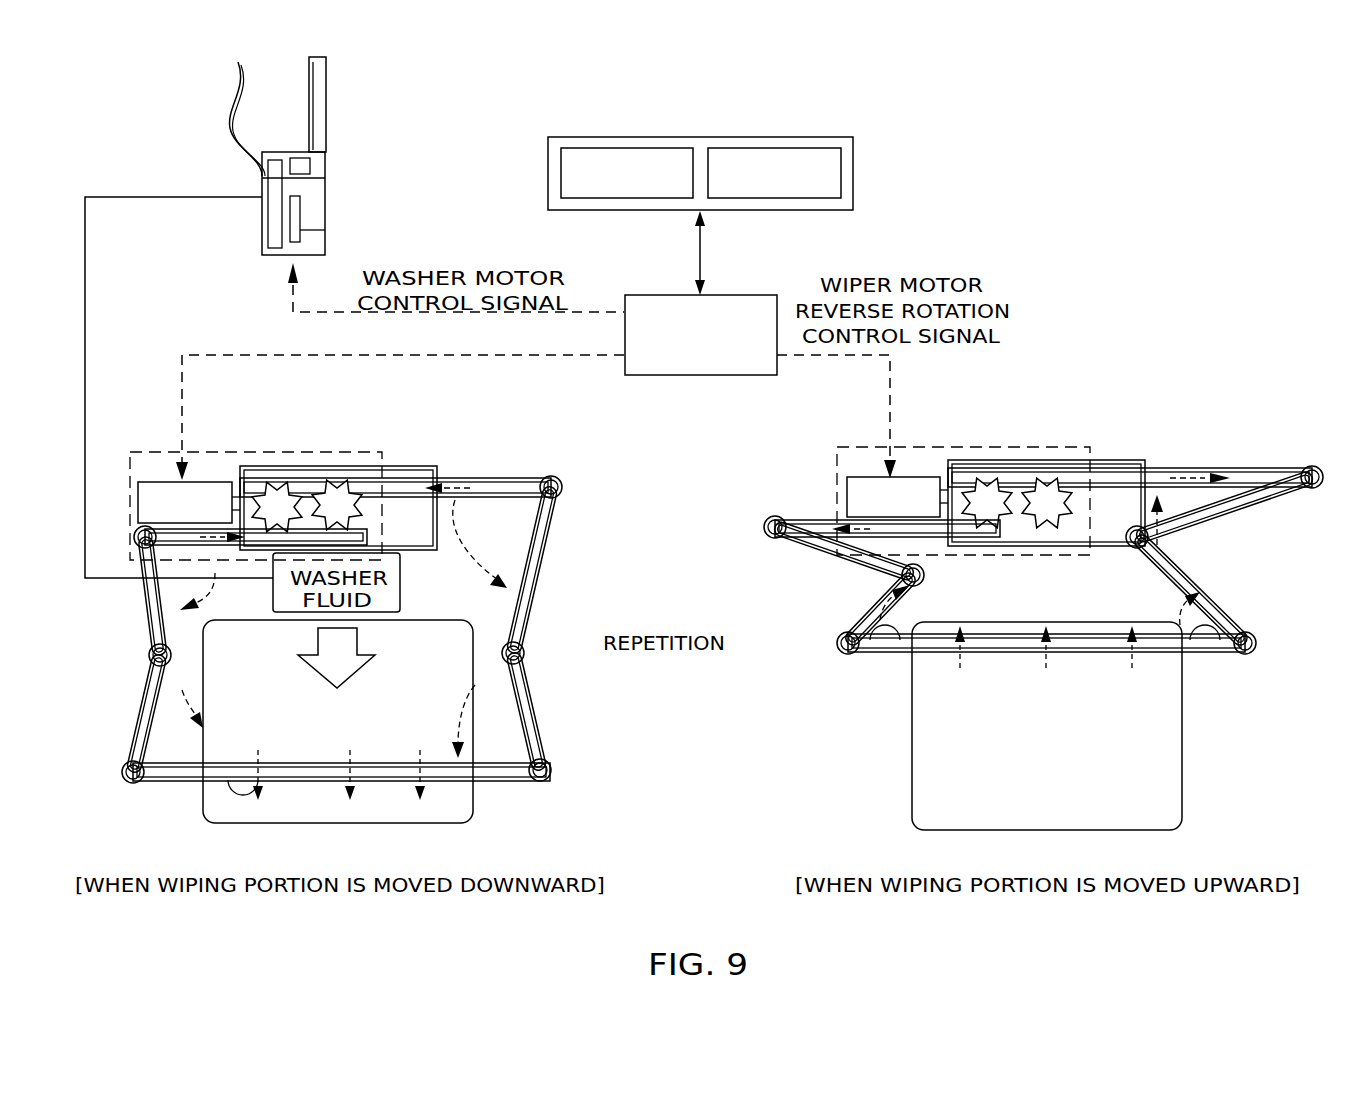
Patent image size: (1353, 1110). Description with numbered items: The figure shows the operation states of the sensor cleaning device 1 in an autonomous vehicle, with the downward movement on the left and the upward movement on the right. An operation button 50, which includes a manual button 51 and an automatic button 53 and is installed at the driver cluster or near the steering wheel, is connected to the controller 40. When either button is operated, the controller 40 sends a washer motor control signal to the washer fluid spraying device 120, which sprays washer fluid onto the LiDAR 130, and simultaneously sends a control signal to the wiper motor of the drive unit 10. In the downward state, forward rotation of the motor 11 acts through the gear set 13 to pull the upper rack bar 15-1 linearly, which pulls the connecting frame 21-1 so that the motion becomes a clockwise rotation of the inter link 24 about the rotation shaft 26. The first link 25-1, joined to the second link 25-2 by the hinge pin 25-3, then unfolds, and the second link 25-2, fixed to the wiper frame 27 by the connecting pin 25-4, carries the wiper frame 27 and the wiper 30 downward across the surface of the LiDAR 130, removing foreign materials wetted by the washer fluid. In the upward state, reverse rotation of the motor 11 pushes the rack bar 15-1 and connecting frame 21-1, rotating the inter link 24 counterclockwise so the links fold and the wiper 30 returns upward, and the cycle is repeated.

The sensor cleaning device 1 is at (1099, 198).
The drive unit 10 is at (205, 452).
The motor 11 is at (172, 480).
The gear set 13 is at (337, 480).
The upper rack bar 15-1 is at (405, 466).
The right-side connecting frame 21-1 is at (478, 478).
The inter link 24 is at (551, 476).
The first link 25-1 is at (552, 555).
The second link 25-2 is at (546, 740).
The hinge pin 25-3 is at (150, 654).
The connecting pin 25-4 is at (138, 764).
The rotation shaft 26 is at (138, 530).
The wiper frame 27 is at (508, 782).
The wiper 30 is at (182, 782).
The controller 40 is at (700, 378).
The operation button 50 is at (855, 152).
The manual button 51 is at (776, 140).
The automatic button 53 is at (628, 140).
The washer fluid spraying device 120 is at (326, 182).
The LiDAR 130 is at (473, 671).